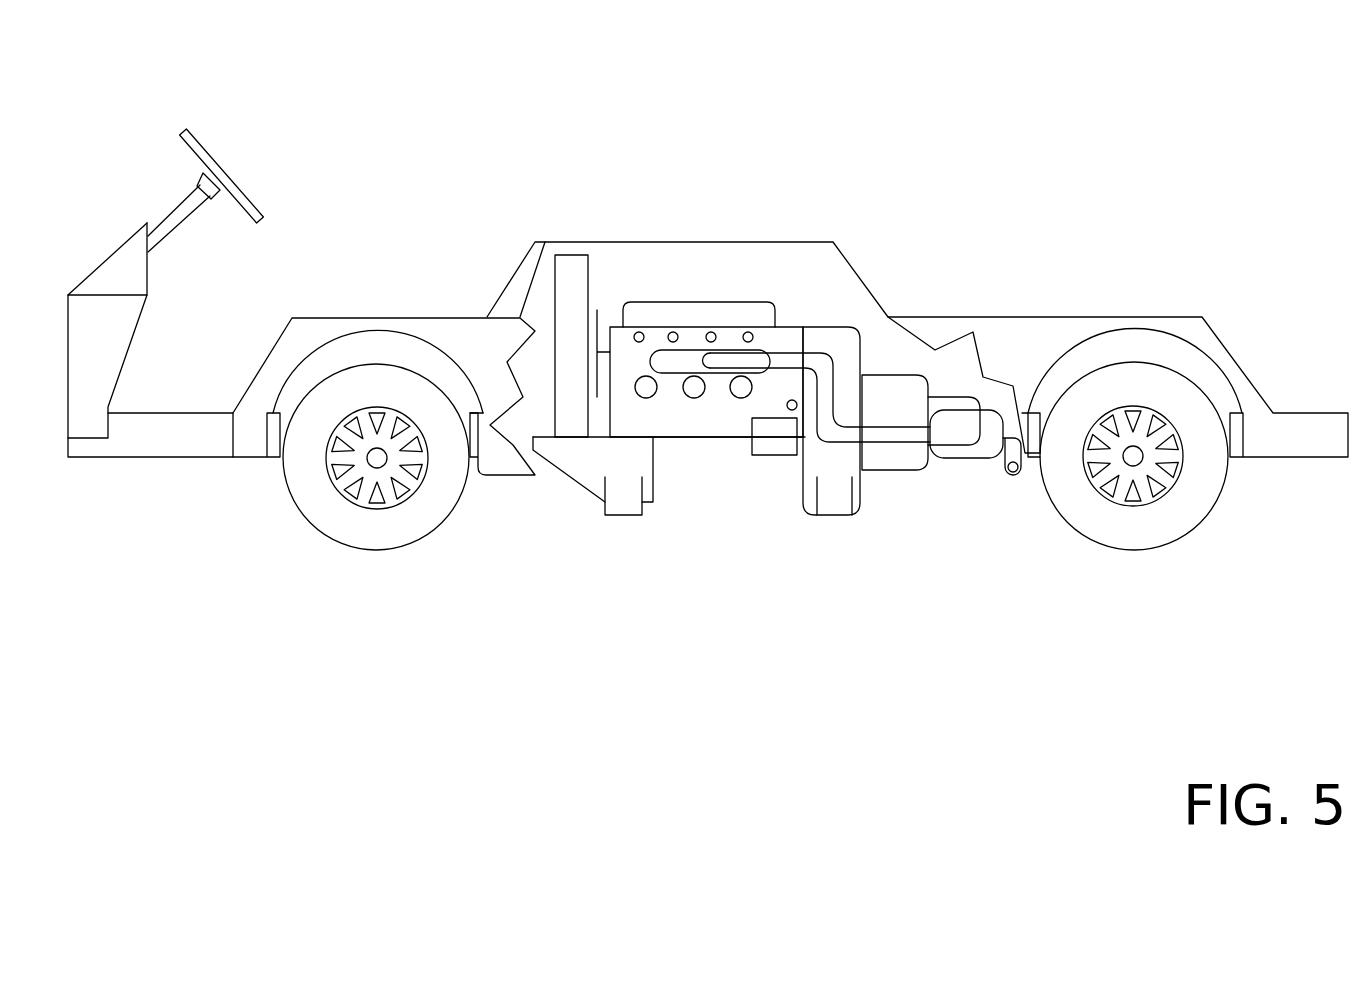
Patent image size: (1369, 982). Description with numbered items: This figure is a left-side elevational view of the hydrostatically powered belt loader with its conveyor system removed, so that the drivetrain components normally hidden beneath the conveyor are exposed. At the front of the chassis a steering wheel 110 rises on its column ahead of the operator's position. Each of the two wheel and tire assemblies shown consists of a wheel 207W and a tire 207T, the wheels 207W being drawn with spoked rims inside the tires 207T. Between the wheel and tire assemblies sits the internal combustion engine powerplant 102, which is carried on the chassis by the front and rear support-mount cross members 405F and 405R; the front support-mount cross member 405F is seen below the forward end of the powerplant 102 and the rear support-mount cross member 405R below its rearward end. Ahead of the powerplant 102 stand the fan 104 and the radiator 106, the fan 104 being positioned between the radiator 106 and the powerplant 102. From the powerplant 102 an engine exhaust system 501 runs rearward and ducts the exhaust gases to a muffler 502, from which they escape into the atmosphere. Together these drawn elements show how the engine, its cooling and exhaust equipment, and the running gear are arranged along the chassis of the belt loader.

The steering wheel 110 is at (185, 137).
The radiator 106 is at (570, 270).
The fan 104 is at (602, 312).
The internal combustion engine powerplant 102 is at (678, 415).
The engine exhaust system 501 is at (787, 360).
The muffler 502 is at (988, 421).
The front support-mount cross member 405F is at (625, 498).
The rear support-mount cross member 405R is at (833, 502).
The wheel 207W is at (360, 473).
The tire 207T is at (355, 532).